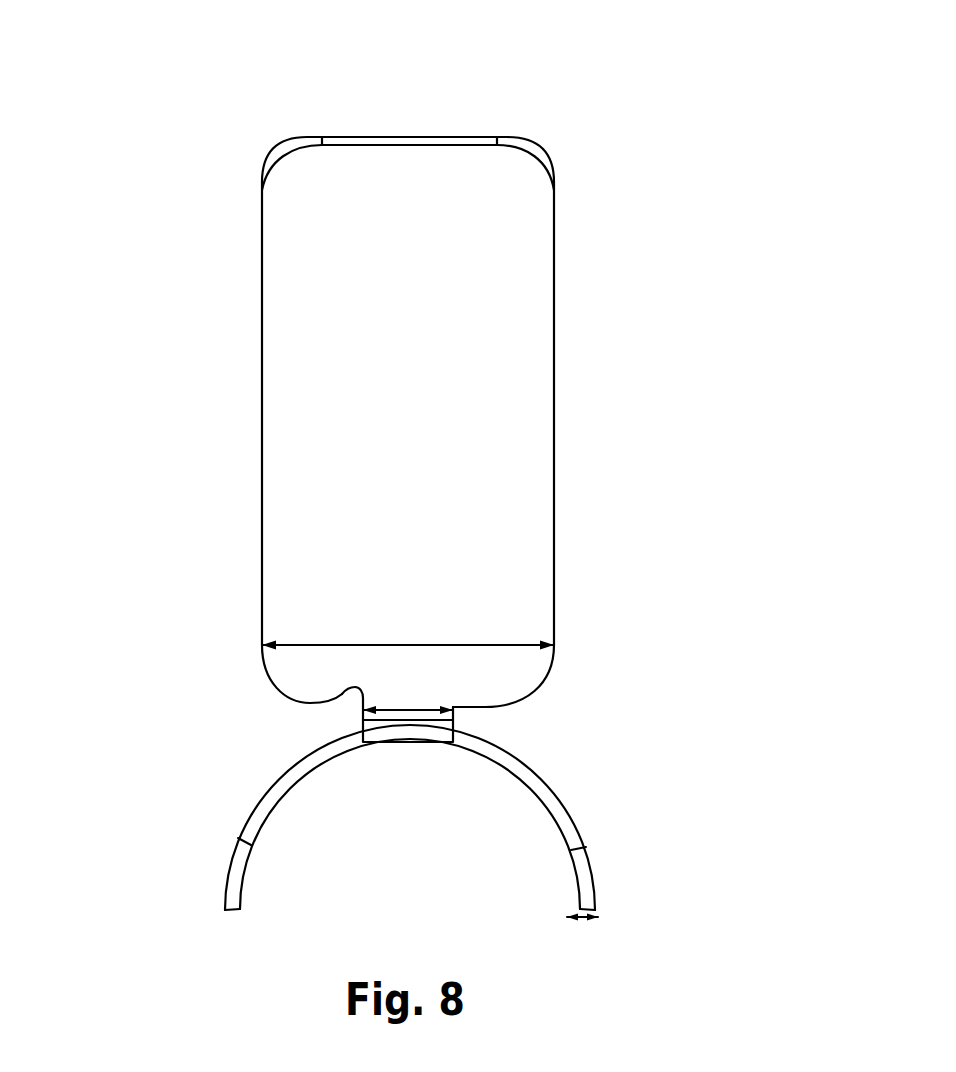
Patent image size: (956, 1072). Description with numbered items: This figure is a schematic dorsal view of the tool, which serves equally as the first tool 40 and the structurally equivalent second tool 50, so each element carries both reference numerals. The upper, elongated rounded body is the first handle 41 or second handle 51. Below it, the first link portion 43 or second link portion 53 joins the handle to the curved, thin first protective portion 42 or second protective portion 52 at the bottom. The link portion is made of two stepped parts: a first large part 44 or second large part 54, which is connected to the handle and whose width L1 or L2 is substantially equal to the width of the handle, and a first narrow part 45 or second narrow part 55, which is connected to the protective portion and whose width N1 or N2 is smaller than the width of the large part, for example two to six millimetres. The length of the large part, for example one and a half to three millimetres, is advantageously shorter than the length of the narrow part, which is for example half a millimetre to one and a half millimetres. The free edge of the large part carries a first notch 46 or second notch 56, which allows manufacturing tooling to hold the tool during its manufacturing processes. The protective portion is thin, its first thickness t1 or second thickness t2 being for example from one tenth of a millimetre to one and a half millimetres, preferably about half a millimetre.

The first tool 40 is at (436, 532).
The second tool 50 is at (220, 144).
The first handle 41 is at (484, 391).
The second handle 51 is at (527, 225).
The first protective portion 42 is at (325, 817).
The second protective portion 52 is at (245, 835).
The first link portion 43 is at (539, 693).
The second link portion 53 is at (539, 693).
The first large part 44 is at (482, 676).
The second large part 54 is at (475, 673).
The first narrow part 45 is at (532, 718).
The second narrow part 55 is at (455, 715).
The first notch 46 is at (243, 724).
The second notch 56 is at (349, 703).
The width of the first large part L1 is at (408, 628).
The width of the second large part L2 is at (408, 628).
The width of the first narrow part N1 is at (408, 693).
The width of the second narrow part N2 is at (408, 693).
The first thickness t1 is at (582, 937).
The second thickness t2 is at (582, 937).